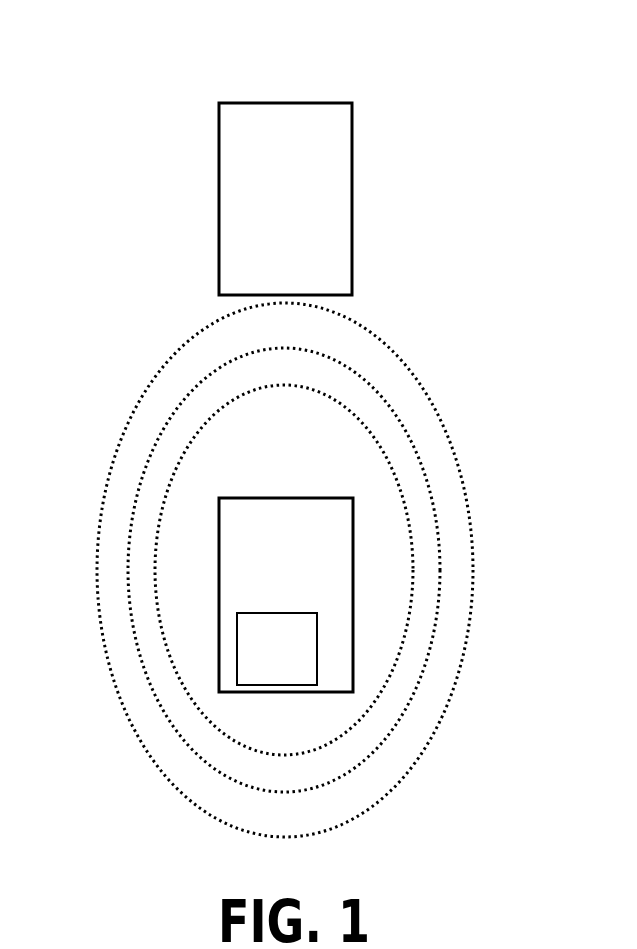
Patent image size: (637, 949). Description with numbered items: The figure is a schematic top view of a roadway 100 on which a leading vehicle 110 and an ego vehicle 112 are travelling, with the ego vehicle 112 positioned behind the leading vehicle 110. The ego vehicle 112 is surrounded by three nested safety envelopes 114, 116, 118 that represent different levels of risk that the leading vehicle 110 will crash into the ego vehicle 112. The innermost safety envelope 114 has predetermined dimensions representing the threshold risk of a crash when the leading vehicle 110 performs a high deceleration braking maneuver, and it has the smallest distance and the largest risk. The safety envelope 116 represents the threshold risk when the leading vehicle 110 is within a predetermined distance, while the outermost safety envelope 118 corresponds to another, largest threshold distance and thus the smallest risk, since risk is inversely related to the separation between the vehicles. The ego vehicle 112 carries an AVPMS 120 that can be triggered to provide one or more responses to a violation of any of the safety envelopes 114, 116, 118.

The roadway 100 is at (302, 45).
The leading vehicle 110 is at (302, 248).
The ego vehicle 112 is at (308, 608).
The safety envelope 114 is at (362, 420).
The safety envelope 116 is at (177, 408).
The safety envelope 118 is at (368, 331).
The AVPMS 120 is at (300, 677).